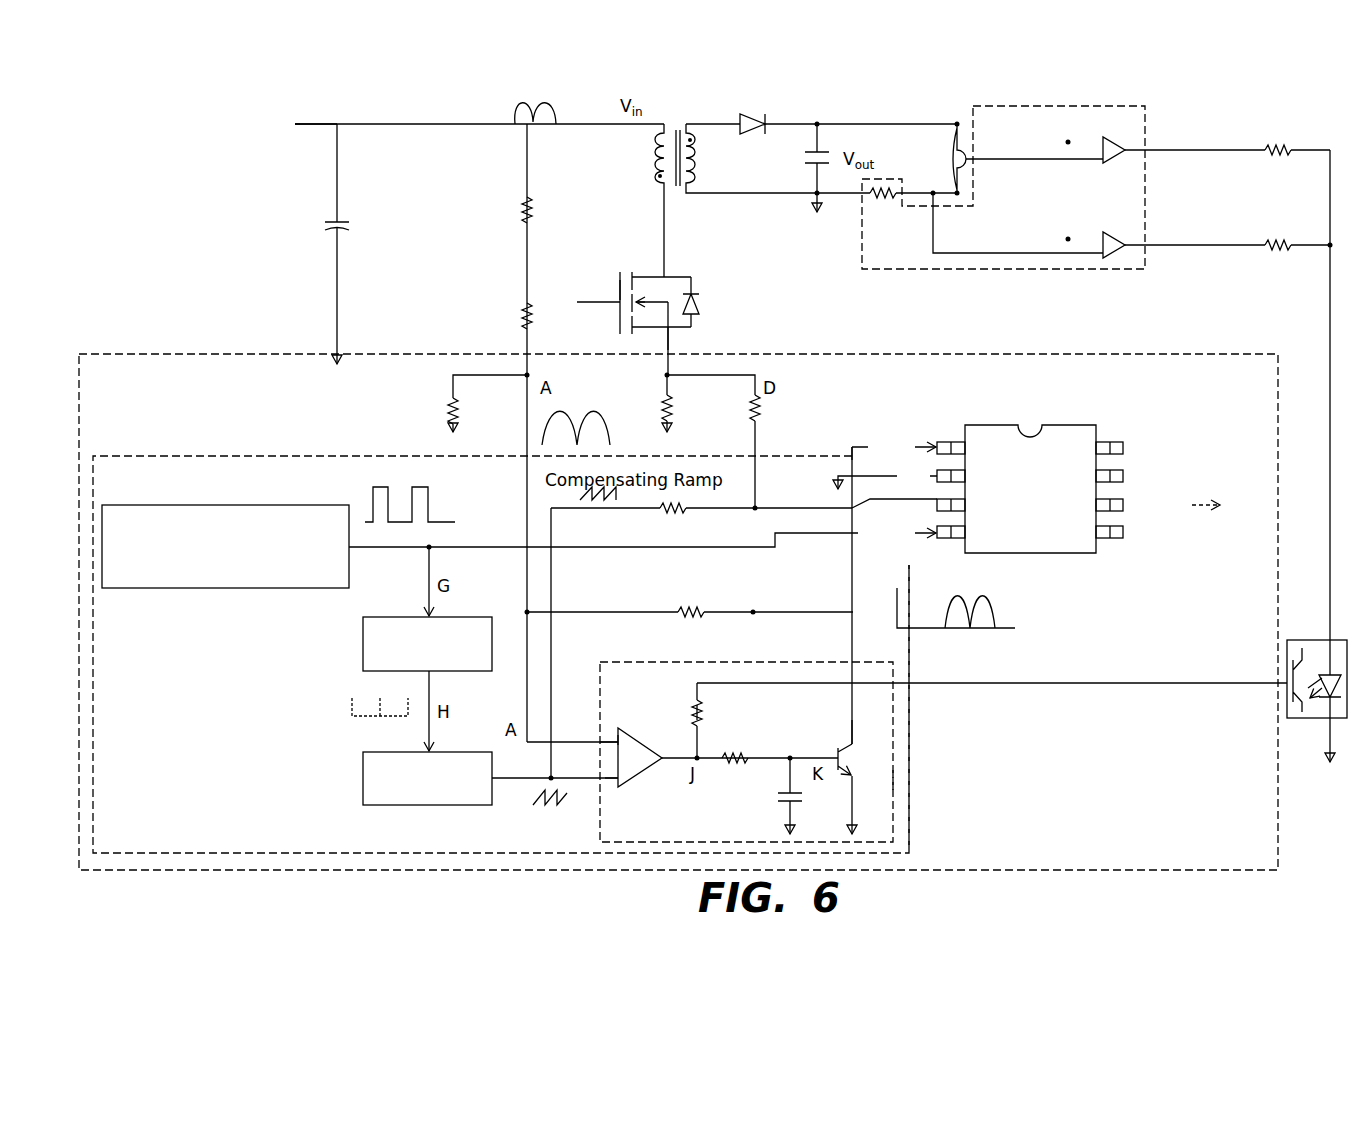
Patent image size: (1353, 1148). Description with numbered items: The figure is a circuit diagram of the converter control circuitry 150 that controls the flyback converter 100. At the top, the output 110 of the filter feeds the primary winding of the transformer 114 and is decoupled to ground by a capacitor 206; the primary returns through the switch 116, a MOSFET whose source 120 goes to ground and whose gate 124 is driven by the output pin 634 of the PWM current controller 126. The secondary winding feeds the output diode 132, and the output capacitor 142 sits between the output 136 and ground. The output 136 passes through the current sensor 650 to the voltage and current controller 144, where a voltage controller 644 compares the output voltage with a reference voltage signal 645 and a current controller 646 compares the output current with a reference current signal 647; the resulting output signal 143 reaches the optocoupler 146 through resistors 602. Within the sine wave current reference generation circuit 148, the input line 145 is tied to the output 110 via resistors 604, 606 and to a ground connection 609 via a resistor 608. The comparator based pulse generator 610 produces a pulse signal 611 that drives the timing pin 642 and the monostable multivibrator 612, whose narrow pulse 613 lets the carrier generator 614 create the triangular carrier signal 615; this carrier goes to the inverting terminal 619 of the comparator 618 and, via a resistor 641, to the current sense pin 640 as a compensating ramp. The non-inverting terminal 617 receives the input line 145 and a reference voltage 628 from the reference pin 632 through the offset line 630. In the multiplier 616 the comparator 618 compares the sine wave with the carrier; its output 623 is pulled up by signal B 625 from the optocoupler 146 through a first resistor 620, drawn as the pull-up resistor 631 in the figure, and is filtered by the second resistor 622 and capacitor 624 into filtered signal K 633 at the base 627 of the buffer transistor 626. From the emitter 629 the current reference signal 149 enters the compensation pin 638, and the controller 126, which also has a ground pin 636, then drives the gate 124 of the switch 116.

The flyback converter 100 is at (176, 177).
The output of the filter 110 is at (306, 128).
The capacitor 206 is at (330, 222).
The resistor 604 is at (522, 200).
The resistor 606 is at (522, 305).
The input line 145 is at (525, 345).
The resistor 608 is at (449, 400).
The ground connection 609 is at (450, 438).
The sine wave current reference generation circuit 148 is at (217, 454).
The transformer 114 is at (660, 166).
The output diode 132 is at (758, 132).
The output capacitor 142 is at (812, 165).
The switch 116 is at (702, 276).
The gate 124 is at (612, 290).
The source 120 is at (675, 330).
The output 136 is at (957, 124).
The current sensor 650 is at (882, 197).
The reference voltage signal 645 is at (1066, 145).
The reference current signal 647 is at (1066, 243).
The voltage and current controller 144 is at (930, 272).
The converter control circuitry 150 is at (934, 352).
The voltage controller 644 is at (1118, 160).
The current controller 646 is at (1118, 255).
The resistors 602 is at (1278, 146).
The output signal 143 is at (1330, 323).
The PWM current controller 126 is at (1053, 424).
The COMP pin 638 is at (947, 441).
The current sense pin 640 is at (870, 498).
The VREF pin 632 is at (1118, 443).
The output pin 634 is at (1122, 501).
The ground pin 636 is at (1118, 541).
The RT/CT pin 642 is at (950, 541).
The resistor 641 is at (688, 512).
The carrier signal 615 is at (633, 500).
The pulse signal 611 is at (370, 497).
The comparator based pulse generator 610 is at (207, 588).
The monostable multivibrator 612 is at (363, 650).
The narrow pulse 613 is at (352, 703).
The carrier generator 614 is at (363, 775).
The offset line 630 is at (650, 613).
The reference voltage 628 is at (755, 614).
The current reference signal 149 is at (851, 578).
The output of the comparator 623 is at (628, 724).
The comparator 618 is at (630, 728).
The non-inverting terminal 617 is at (600, 740).
The inverting terminal 619 is at (615, 798).
The pull-up resistor 631 is at (686, 755).
The first resistor 620 is at (706, 714).
The second resistor 622 is at (738, 756).
The capacitor 624 is at (780, 803).
The filtered signal K 633 is at (835, 755).
The emitter 629 is at (846, 744).
The base 627 is at (842, 790).
The buffer transistor 626 is at (872, 745).
The multiplier 616 is at (894, 782).
The signal B 625 is at (1030, 682).
The optocoupler 146 is at (1318, 640).